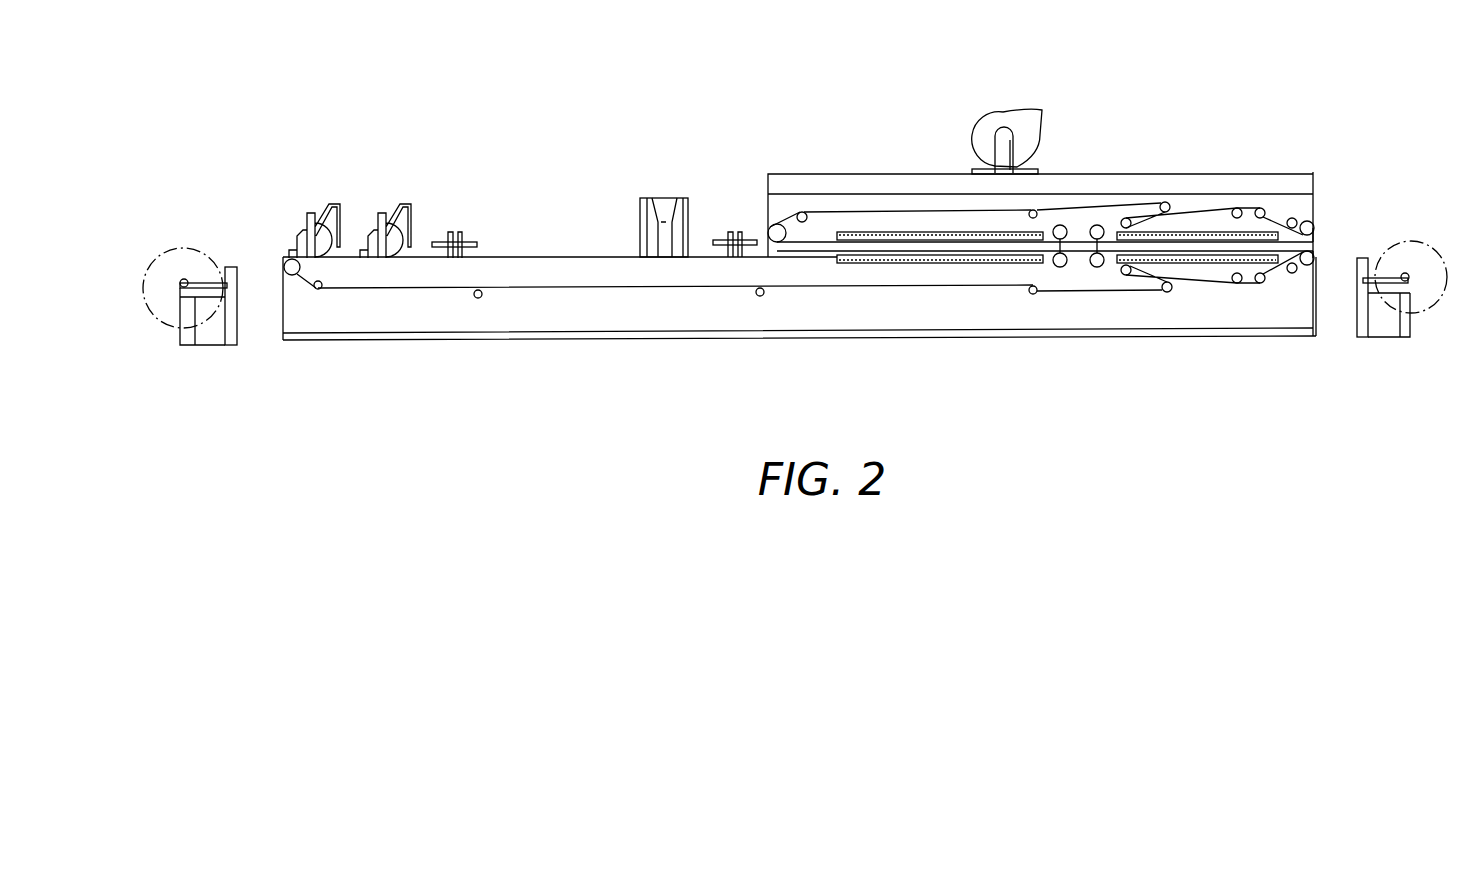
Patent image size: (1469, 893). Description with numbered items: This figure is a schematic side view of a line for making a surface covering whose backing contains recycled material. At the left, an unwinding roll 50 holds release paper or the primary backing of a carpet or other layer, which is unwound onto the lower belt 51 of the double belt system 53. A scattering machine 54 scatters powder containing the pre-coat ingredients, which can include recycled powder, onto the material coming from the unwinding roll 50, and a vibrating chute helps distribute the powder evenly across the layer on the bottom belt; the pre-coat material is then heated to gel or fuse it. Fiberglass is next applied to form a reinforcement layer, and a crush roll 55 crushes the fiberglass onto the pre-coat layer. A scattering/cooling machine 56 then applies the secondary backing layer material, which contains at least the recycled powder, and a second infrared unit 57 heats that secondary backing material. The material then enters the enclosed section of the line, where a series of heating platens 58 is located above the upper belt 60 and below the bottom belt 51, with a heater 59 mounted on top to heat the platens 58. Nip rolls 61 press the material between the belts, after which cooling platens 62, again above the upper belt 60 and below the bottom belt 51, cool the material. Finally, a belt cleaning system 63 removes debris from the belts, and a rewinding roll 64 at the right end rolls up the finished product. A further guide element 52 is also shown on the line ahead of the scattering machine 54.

The unwinding roll 50 is at (172, 257).
The lower belt 51 is at (303, 292).
The first guide 52 is at (313, 213).
The double belt system 53 is at (407, 207).
The scattering machine 54 is at (458, 232).
The crush roll 55 is at (491, 282).
The scattering/cooling machine 56 is at (658, 198).
The second infrared unit 57 is at (738, 232).
The heating platens 58 is at (893, 233).
The heater 59 is at (1000, 120).
The upper belt 60 is at (797, 205).
The nip rolls 61 is at (1073, 218).
The cooling platens 62 is at (1225, 240).
The belt cleaning system 63 is at (1319, 219).
The rewinding roll 64 is at (1413, 248).